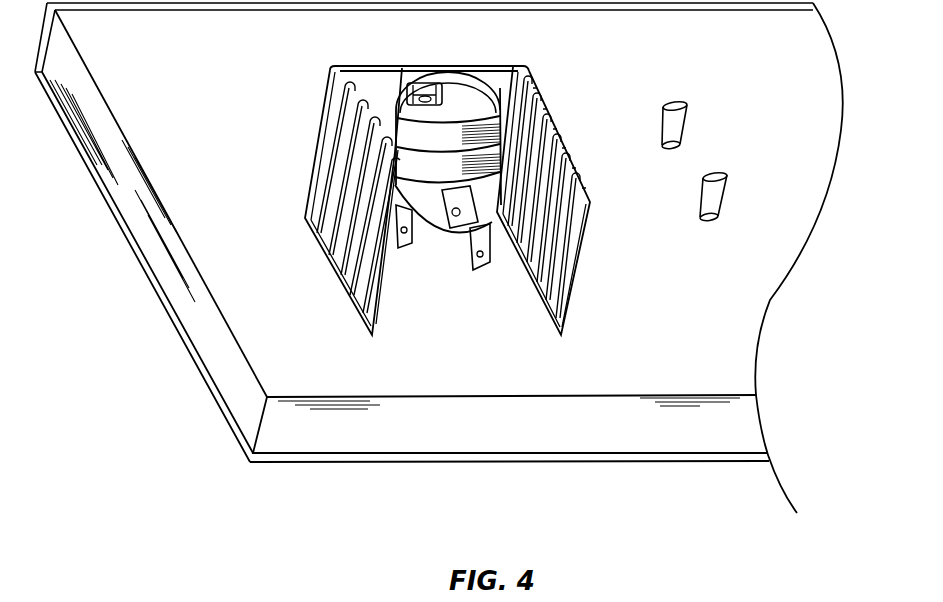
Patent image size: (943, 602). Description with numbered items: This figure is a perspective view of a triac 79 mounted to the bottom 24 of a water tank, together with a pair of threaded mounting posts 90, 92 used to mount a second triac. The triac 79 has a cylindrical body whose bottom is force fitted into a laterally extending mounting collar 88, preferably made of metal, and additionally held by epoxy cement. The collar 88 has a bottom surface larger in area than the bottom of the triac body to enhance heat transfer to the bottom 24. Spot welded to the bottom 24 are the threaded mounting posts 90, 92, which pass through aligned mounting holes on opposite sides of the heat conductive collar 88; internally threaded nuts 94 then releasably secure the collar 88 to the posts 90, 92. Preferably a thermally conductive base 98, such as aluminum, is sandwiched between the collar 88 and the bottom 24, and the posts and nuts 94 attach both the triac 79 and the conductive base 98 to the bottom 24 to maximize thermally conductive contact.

The bottom 24 is at (242, 272).
The triac 79 is at (417, 173).
The mounting collar 88 is at (457, 110).
The threaded mounting post 90 is at (677, 117).
The threaded mounting post 92 is at (717, 188).
The internally threaded nut 94 is at (410, 93).
The conductive base 98 is at (500, 76).